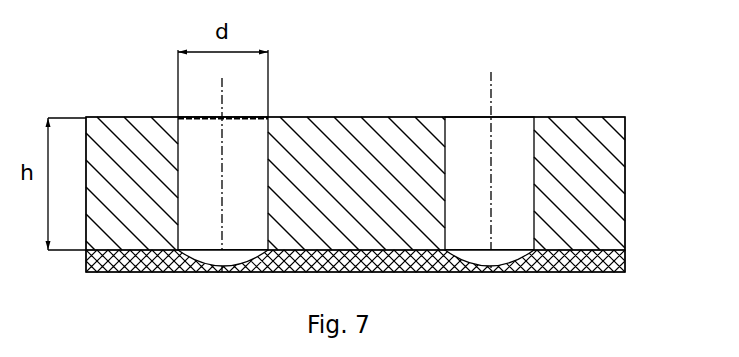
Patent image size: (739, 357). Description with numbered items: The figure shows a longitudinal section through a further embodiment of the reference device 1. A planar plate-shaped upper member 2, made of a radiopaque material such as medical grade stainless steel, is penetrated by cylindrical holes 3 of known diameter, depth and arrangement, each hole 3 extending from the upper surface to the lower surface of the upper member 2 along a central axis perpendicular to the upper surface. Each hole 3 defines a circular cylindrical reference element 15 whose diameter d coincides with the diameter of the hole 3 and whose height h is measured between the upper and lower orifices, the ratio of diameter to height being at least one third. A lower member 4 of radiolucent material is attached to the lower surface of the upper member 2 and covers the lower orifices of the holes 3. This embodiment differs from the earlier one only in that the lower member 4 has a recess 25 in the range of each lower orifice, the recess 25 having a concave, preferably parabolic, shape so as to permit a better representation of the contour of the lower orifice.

The reference device 1 is at (572, 50).
The upper member 2 is at (593, 181).
The hole 3 is at (270, 128).
The lower member 4 is at (592, 272).
The reference element 15 is at (202, 115).
The recess 25 is at (203, 273).